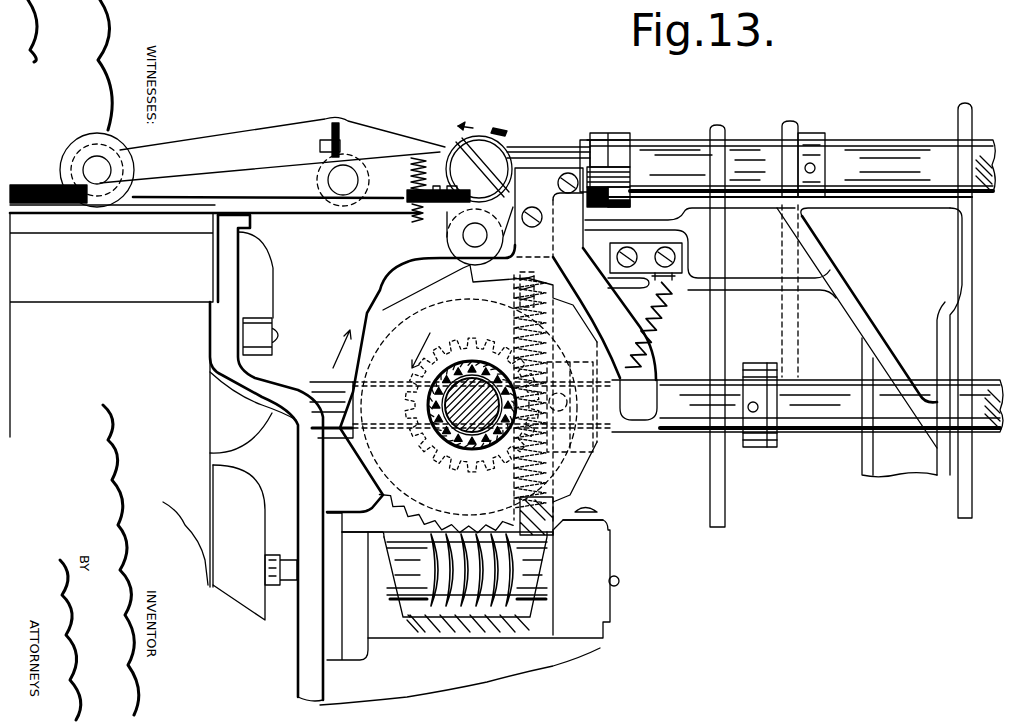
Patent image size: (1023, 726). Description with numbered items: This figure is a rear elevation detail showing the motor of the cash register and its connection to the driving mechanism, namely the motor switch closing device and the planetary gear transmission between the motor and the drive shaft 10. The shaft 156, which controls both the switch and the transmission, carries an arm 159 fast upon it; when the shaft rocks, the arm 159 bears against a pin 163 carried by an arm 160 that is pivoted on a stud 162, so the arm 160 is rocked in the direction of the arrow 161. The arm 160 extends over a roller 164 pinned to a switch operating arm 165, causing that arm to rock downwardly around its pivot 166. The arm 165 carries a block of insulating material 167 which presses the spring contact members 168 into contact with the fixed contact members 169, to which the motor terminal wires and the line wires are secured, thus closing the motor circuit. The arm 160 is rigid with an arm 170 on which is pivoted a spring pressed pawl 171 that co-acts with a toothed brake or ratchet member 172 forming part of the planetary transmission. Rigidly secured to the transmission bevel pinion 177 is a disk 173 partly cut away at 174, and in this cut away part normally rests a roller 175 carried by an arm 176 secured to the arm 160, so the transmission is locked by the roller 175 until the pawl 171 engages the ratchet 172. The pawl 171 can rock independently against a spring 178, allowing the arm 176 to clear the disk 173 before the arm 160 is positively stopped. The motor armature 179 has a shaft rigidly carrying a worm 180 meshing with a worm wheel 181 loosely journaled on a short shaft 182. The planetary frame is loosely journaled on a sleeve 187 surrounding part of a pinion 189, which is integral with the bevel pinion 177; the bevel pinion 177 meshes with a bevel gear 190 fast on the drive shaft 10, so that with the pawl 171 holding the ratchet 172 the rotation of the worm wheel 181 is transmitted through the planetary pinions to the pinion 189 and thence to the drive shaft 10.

The drive shaft 10 is at (803, 432).
The shaft 156 is at (907, 143).
The arm 159 is at (636, 140).
The arm 160 is at (393, 140).
The arrow 161 is at (466, 124).
The stud 162 is at (492, 158).
The pin 163 is at (632, 170).
The roller 164 is at (345, 176).
The switch operating arm 165 is at (205, 152).
The pivot 166 is at (110, 168).
The block of insulating material 167 is at (336, 124).
The spring contact members 168 is at (160, 187).
The fixed contact members 169 is at (410, 203).
The arm 170 is at (462, 241).
The spring pressed pawl 171 is at (383, 277).
The toothed member 172 is at (583, 480).
The disk 173 is at (430, 300).
The cut away part 174 is at (583, 450).
The roller 175 is at (556, 392).
The arm 176 is at (650, 352).
The bevel pinion 177 is at (487, 443).
The spring 178 is at (333, 193).
The motor armature 179 is at (247, 490).
The worm 180 is at (470, 605).
The worm wheel 181 is at (390, 508).
The short shaft 182 is at (450, 413).
The sleeve 187 is at (513, 470).
The pinion 189 is at (432, 389).
The bevel gear 190 is at (600, 522).